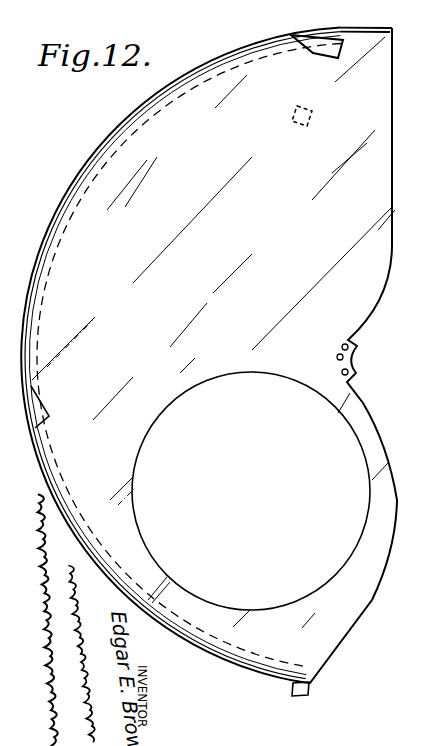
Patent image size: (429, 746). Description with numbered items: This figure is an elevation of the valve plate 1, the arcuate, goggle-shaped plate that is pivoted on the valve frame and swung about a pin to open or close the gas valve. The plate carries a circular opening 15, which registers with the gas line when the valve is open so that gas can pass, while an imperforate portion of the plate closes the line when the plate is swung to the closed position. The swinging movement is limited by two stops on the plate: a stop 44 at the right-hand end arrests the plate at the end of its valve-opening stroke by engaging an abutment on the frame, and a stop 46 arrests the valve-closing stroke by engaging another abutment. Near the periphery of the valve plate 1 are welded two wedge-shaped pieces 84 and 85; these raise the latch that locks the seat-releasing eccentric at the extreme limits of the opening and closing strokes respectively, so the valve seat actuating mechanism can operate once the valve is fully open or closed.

The valve plate 1 is at (141, 156).
The opening 15 is at (356, 549).
The stop 44 is at (302, 729).
The stop 46 is at (292, 114).
The wedge-shaped piece 84 is at (48, 415).
The wedge-shaped piece 85 is at (309, 58).